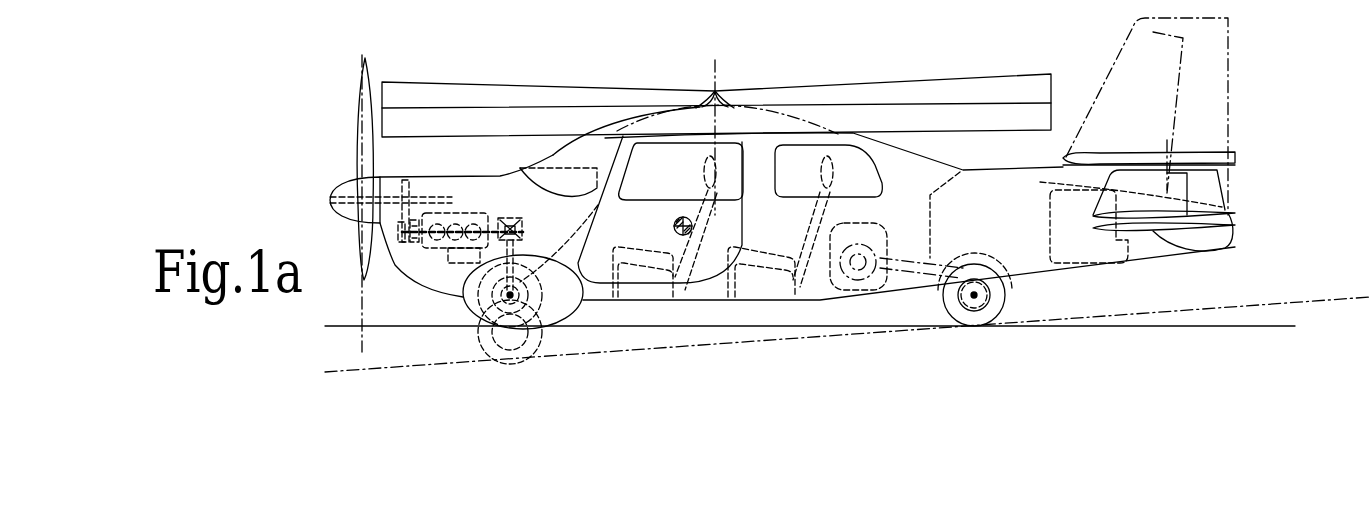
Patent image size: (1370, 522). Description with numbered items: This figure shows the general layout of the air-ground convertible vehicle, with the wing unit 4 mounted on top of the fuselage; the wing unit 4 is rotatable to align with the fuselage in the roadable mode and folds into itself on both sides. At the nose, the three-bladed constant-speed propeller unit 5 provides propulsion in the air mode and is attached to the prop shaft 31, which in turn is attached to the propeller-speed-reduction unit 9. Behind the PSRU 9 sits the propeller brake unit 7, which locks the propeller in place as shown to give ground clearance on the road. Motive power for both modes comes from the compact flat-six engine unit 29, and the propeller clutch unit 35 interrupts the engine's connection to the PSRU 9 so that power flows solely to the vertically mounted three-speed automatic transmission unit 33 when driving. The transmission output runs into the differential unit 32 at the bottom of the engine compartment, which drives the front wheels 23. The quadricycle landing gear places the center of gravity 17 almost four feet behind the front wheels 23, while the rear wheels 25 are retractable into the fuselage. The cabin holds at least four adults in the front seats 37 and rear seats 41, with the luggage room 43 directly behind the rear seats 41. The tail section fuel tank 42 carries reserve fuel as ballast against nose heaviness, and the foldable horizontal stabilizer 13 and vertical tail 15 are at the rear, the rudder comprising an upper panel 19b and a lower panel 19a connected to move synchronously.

The wing unit 4 is at (690, 82).
The propeller unit 5 is at (362, 120).
The propeller brake unit 7 is at (420, 207).
The propeller-speed-reduction unit (PSRU) 9 is at (404, 247).
The horizontal stabilizer 13 is at (1153, 230).
The vertical tail 15 is at (1120, 70).
The center of gravity (CG) 17 is at (676, 222).
The rudder lower panel 19a is at (1230, 173).
The rudder upper panel 19b is at (1203, 70).
The front wheel 23 is at (545, 317).
The rear wheel 25 is at (993, 313).
The engine unit 29 is at (450, 251).
The prop shaft 31 is at (390, 207).
The differential unit 32 is at (515, 288).
The transmission unit 33 is at (522, 224).
The propeller clutch unit 35 is at (418, 247).
The front seats 37 is at (657, 270).
The rear seats 41 is at (777, 270).
The tail section fuel tank 42 is at (1075, 247).
The luggage room 43 is at (890, 213).